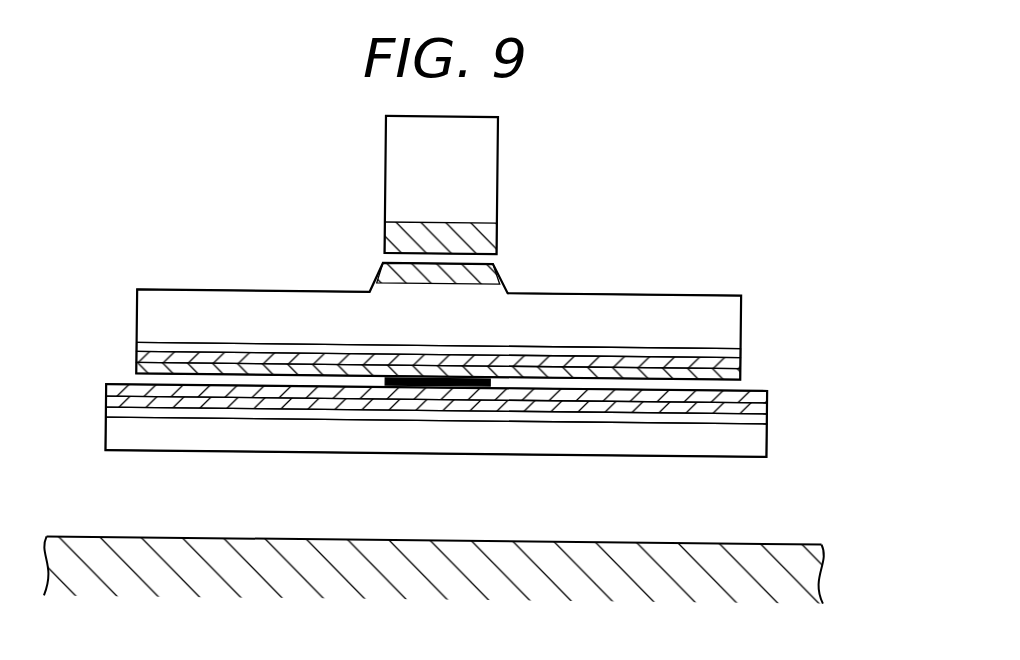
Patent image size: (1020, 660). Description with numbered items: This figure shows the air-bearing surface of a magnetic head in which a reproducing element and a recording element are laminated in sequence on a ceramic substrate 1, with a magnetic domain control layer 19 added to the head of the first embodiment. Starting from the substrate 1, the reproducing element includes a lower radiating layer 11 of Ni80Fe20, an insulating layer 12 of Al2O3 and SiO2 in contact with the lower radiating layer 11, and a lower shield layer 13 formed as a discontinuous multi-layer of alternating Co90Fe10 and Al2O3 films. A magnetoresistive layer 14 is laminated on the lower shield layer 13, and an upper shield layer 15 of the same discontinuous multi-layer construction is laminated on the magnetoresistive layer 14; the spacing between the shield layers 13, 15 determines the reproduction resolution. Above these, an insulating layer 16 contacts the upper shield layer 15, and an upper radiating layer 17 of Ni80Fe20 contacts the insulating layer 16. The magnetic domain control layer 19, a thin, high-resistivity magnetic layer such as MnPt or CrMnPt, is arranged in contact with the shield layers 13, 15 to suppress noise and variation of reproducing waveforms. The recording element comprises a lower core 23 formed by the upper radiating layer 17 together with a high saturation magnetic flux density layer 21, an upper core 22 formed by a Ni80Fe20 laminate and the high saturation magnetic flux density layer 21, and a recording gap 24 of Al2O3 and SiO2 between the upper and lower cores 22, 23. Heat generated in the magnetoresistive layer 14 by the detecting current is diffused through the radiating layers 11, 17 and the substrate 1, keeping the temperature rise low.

The ceramic substrate 1 is at (758, 590).
The lower radiating layer 11 is at (683, 429).
The insulating layer 12 is at (625, 414).
The lower shield layer 13 is at (545, 390).
The magnetoresistive layer 14 is at (462, 379).
The upper shield layer 15 is at (287, 366).
The insulating layer 16 is at (233, 346).
The upper radiating layer 17 is at (178, 307).
The magnetic domain control layer 19 is at (216, 361).
The high saturation magnetic flux density layer 21 is at (475, 234).
The upper core 22 is at (497, 161).
The lower core 23 is at (653, 280).
The recording gap 24 is at (388, 253).